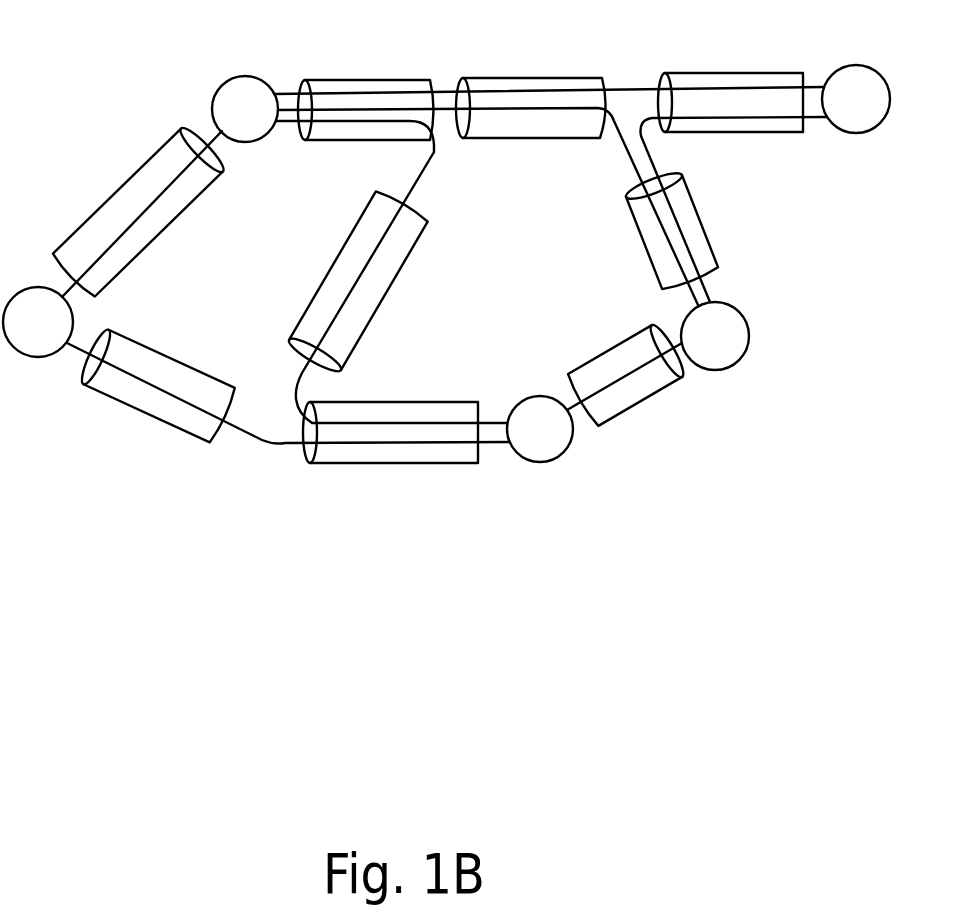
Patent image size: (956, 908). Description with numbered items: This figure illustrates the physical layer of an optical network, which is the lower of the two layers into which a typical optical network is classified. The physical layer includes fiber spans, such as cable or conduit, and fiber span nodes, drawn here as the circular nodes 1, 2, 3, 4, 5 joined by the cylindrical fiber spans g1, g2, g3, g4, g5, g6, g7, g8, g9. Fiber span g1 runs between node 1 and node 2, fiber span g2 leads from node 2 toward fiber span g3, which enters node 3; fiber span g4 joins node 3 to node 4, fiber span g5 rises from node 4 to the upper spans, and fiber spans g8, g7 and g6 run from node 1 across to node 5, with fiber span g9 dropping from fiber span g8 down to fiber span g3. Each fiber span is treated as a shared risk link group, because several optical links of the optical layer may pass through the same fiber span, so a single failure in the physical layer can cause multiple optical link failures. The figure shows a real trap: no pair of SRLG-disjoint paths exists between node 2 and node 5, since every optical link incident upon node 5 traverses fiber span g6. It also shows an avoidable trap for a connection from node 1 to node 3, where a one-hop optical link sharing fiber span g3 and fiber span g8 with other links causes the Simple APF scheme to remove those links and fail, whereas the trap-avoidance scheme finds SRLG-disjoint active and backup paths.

The node 1 is at (245, 109).
The node 2 is at (38, 322).
The node 3 is at (540, 429).
The node 4 is at (715, 336).
The node 5 is at (856, 99).
The fiber span g1 is at (139, 211).
The fiber span g2 is at (157, 382).
The fiber span g3 is at (288, 307).
The fiber span g4 is at (627, 374).
The fiber span g5 is at (663, 230).
The fiber span g6 is at (550, 169).
The fiber span g7 is at (488, 173).
The fiber span g8 is at (355, 98).
The fiber span g9 is at (358, 282).